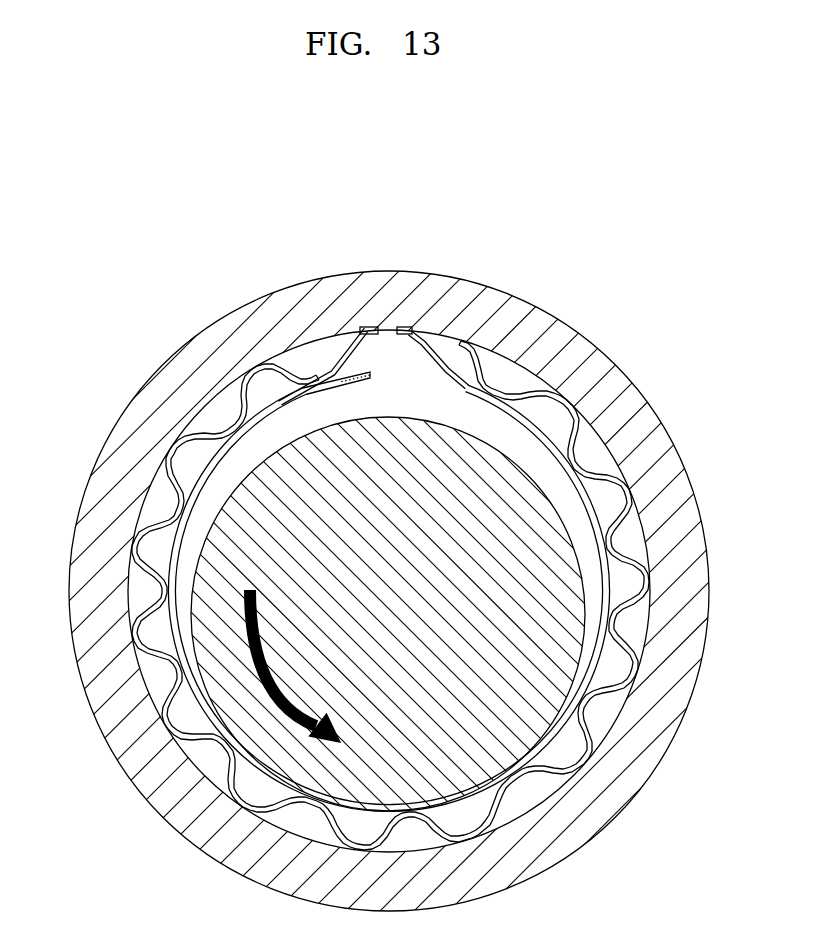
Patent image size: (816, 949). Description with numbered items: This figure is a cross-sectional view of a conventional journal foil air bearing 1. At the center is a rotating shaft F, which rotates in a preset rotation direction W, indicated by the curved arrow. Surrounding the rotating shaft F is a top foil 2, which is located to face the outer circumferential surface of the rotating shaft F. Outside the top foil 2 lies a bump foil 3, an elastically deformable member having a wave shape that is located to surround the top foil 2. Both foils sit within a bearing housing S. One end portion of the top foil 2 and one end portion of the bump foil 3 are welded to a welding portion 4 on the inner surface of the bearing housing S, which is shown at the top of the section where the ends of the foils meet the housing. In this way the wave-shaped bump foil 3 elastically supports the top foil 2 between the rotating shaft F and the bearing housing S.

The journal foil air bearing 1 is at (141, 279).
The top foil 2 is at (462, 384).
The bump foil 3 is at (628, 552).
The welding portion 4 is at (406, 328).
The bearing housing S is at (640, 392).
The rotating shaft F is at (523, 617).
The rotation direction W is at (250, 665).